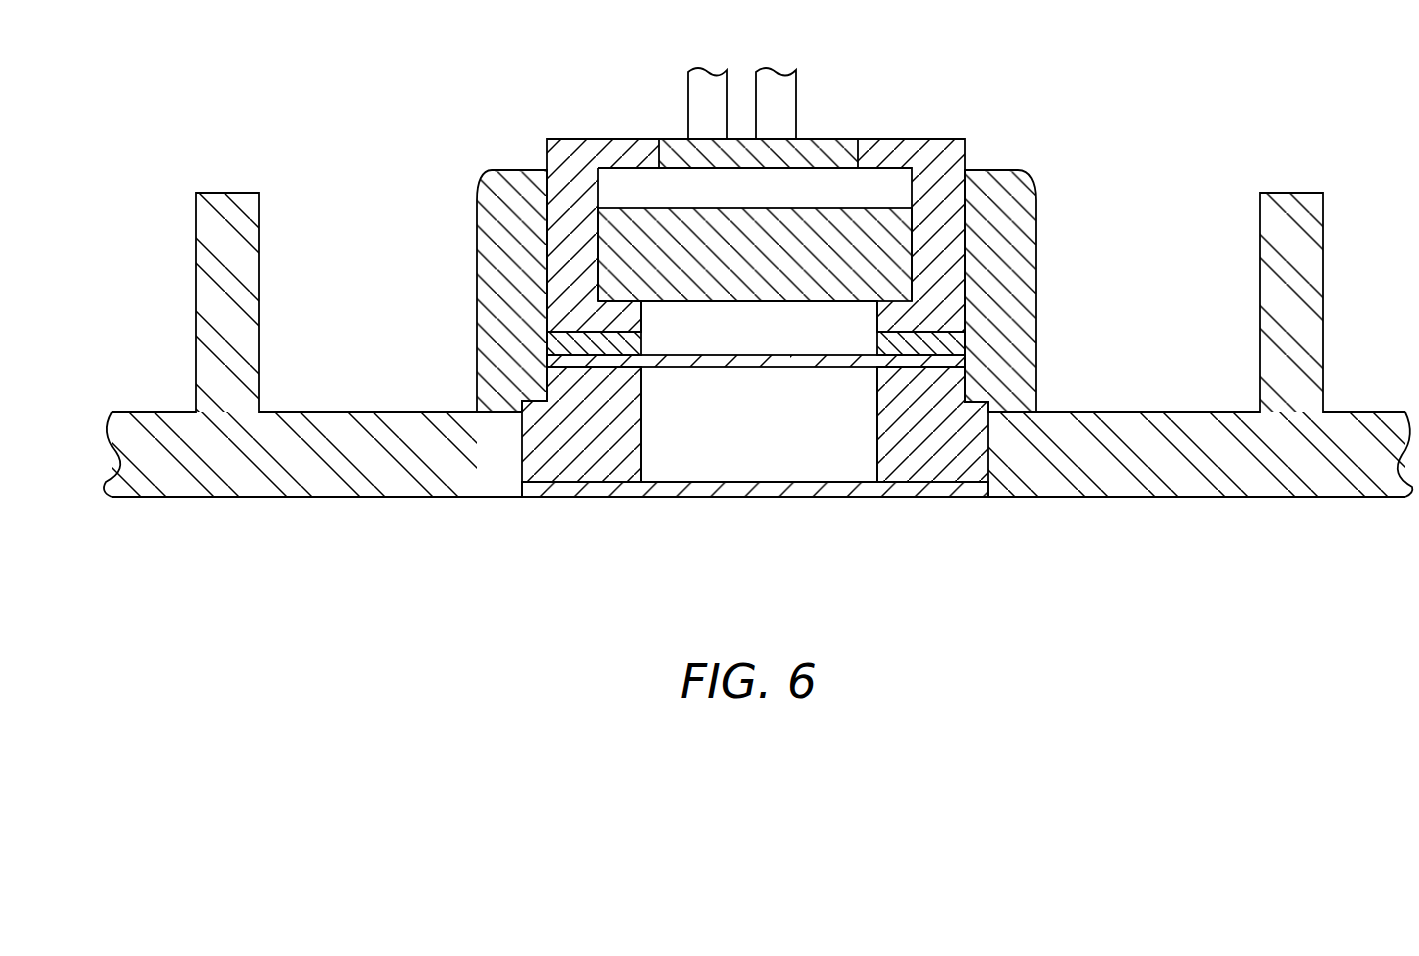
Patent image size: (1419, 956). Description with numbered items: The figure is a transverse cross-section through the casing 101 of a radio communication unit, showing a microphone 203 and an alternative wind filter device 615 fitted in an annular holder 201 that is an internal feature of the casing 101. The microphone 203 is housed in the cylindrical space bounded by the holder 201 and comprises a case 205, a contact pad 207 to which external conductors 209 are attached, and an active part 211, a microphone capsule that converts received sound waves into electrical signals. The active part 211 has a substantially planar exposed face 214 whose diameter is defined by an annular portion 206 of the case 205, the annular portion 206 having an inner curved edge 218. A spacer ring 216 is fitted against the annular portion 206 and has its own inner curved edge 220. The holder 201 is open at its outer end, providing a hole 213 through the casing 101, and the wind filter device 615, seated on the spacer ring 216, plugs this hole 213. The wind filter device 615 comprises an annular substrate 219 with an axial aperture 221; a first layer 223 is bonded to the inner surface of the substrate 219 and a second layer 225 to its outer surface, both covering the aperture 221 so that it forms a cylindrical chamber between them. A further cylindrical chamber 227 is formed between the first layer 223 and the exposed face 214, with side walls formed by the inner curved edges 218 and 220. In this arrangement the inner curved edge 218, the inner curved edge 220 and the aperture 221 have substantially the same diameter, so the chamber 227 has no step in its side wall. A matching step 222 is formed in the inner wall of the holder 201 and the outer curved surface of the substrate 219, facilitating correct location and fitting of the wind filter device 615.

The casing 101 is at (193, 455).
The annular holder 201 is at (1037, 258).
The microphone 203 is at (904, 119).
The case 205 is at (956, 148).
The annular portion 206 is at (622, 317).
The contact pad 207 is at (848, 136).
The external conductors 209 is at (700, 78).
The active part 211 is at (654, 216).
The hole 213 is at (990, 414).
The exposed face 214 is at (757, 303).
The spacer ring 216 is at (548, 346).
The inner curved edge 218 is at (645, 314).
The annular substrate 219 is at (572, 452).
The inner curved edge 220 is at (645, 341).
The axial aperture 221 is at (675, 450).
The step 222 is at (522, 400).
The first layer 223 is at (806, 353).
The second layer 225 is at (759, 498).
The chamber 227 is at (845, 322).
The wind filter device 615 is at (913, 520).